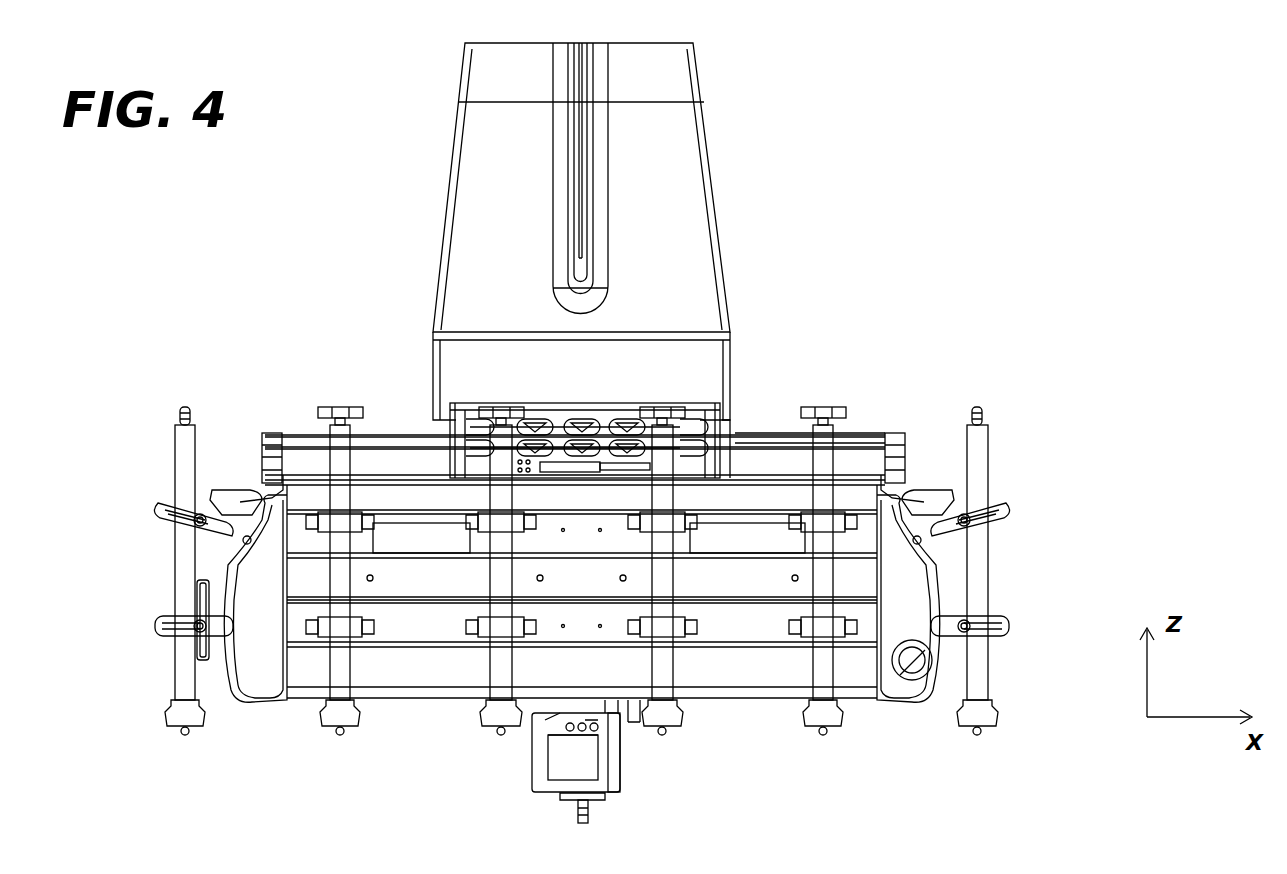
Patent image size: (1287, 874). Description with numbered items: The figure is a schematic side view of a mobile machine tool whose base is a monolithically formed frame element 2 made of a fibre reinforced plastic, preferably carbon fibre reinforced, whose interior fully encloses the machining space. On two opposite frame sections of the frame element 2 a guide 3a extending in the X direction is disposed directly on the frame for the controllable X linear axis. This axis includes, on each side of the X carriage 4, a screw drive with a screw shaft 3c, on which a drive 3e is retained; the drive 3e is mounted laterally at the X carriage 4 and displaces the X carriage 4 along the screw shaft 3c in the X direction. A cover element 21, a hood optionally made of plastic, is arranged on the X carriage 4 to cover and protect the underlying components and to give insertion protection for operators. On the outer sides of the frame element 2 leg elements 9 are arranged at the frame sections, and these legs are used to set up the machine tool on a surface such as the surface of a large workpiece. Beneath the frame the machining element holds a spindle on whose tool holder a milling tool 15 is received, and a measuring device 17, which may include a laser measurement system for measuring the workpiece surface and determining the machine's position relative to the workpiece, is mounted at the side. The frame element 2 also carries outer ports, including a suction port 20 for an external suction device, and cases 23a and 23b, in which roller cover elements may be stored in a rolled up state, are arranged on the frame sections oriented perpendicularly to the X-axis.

The frame element 2 is at (745, 575).
The guide 3a is at (378, 440).
The screw shaft 3c is at (400, 478).
The drive 3e is at (735, 438).
The X carriage 4 is at (446, 428).
The leg element 9 is at (988, 462).
The milling tool 15 is at (580, 815).
The measuring device 17 is at (567, 757).
The suction port 20 is at (928, 658).
The cover element 21 is at (678, 180).
The case 23a is at (240, 492).
The case 23b is at (928, 492).